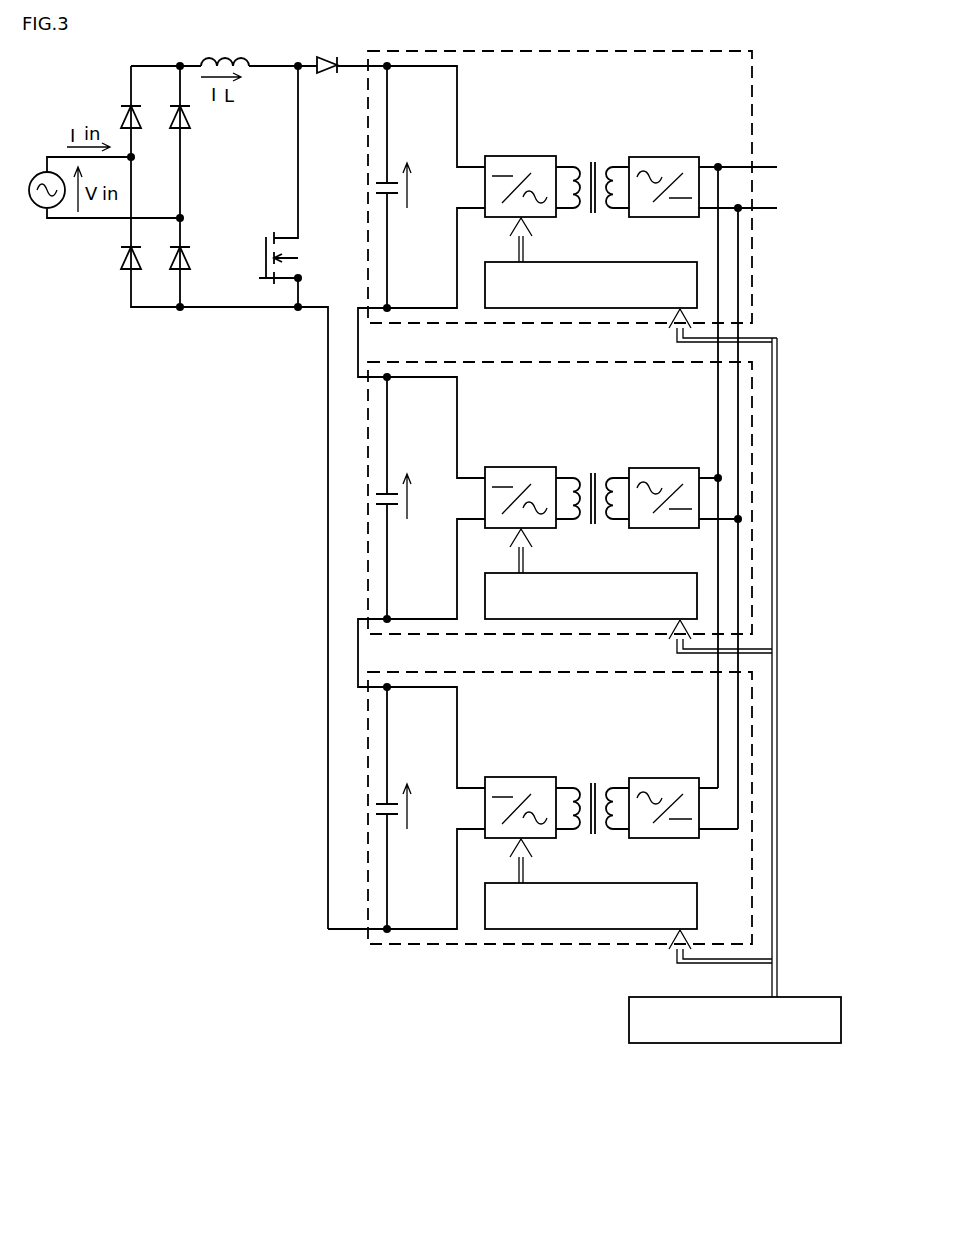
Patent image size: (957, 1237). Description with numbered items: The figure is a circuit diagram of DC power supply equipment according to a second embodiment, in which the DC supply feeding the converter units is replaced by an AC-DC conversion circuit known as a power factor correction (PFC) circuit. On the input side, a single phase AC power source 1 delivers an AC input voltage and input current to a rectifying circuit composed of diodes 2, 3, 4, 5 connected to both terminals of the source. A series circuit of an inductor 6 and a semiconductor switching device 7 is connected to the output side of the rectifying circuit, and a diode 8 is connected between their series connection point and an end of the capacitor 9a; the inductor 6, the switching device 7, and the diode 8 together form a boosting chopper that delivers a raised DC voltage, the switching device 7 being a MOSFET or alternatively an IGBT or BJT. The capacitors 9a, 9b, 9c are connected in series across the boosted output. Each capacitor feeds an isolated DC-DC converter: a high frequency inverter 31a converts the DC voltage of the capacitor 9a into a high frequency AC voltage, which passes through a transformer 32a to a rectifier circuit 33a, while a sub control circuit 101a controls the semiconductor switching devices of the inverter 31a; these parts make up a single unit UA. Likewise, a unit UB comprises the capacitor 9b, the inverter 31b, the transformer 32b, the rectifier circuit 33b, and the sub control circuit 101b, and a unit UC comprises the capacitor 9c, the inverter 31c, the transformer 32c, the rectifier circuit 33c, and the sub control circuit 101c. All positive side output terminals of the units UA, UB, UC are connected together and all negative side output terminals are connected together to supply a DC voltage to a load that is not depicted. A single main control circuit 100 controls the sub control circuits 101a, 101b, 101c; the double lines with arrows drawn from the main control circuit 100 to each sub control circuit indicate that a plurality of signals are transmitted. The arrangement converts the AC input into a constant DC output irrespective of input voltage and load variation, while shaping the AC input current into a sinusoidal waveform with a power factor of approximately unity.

The single phase AC power source 1 is at (42, 172).
The diode 2 is at (125, 104).
The diode 3 is at (124, 247).
The diode 4 is at (173, 104).
The diode 5 is at (173, 246).
The inductor 6 is at (222, 53).
The semiconductor switching device 7 is at (260, 236).
The diode 8 is at (330, 50).
The capacitor 9a is at (382, 177).
The capacitor 9b is at (381, 486).
The capacitor 9c is at (381, 797).
The high frequency inverter 31a is at (527, 163).
The high frequency inverter 31b is at (513, 475).
The high frequency inverter 31c is at (513, 784).
The transformer 32a is at (593, 159).
The transformer 32b is at (594, 470).
The transformer 32c is at (592, 783).
The rectifier circuit 33a is at (665, 166).
The rectifier circuit 33b is at (662, 473).
The rectifier circuit 33c is at (665, 780).
The sub control circuit 101a is at (607, 270).
The sub control circuit 101b is at (583, 582).
The sub control circuit 101c is at (567, 892).
The main control circuit 100 is at (808, 1012).
The unit UA is at (752, 91).
The unit UB is at (753, 406).
The unit UC is at (753, 716).